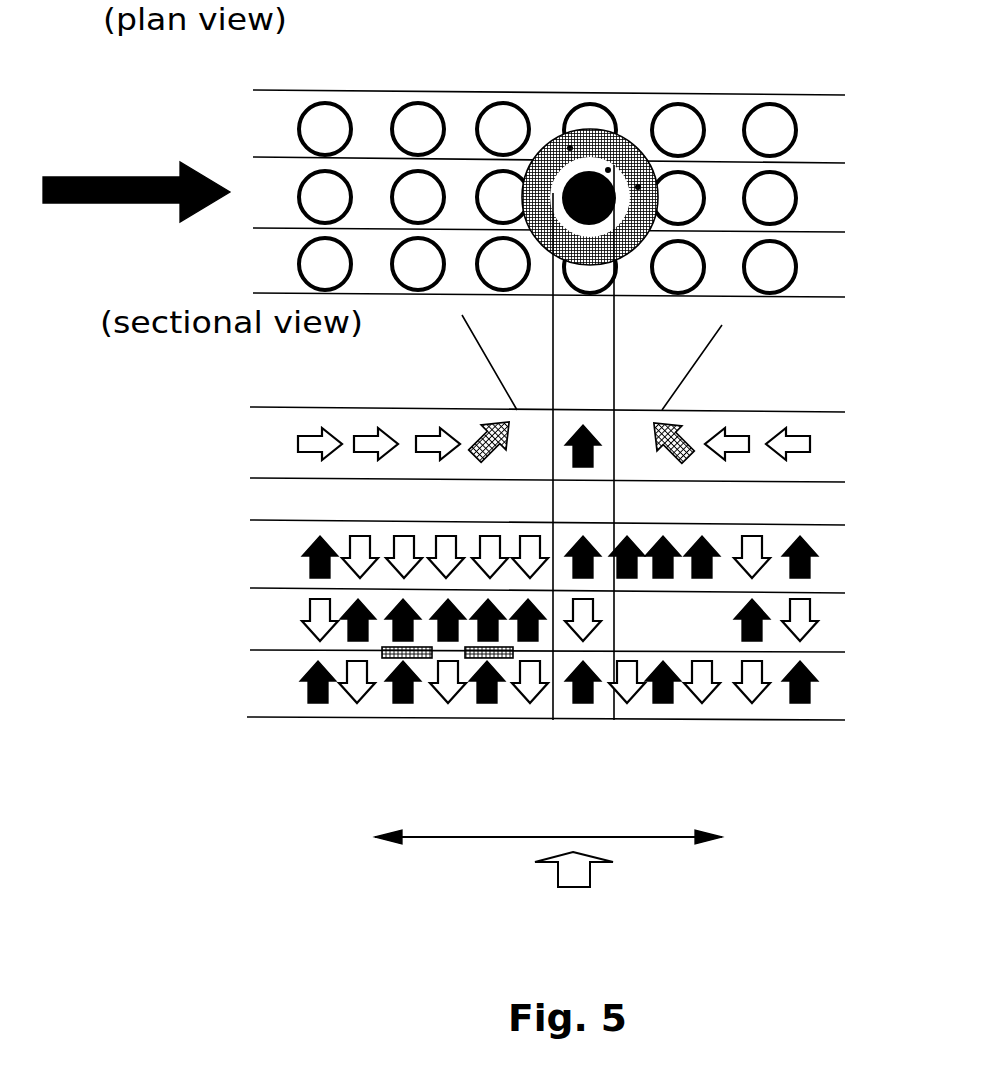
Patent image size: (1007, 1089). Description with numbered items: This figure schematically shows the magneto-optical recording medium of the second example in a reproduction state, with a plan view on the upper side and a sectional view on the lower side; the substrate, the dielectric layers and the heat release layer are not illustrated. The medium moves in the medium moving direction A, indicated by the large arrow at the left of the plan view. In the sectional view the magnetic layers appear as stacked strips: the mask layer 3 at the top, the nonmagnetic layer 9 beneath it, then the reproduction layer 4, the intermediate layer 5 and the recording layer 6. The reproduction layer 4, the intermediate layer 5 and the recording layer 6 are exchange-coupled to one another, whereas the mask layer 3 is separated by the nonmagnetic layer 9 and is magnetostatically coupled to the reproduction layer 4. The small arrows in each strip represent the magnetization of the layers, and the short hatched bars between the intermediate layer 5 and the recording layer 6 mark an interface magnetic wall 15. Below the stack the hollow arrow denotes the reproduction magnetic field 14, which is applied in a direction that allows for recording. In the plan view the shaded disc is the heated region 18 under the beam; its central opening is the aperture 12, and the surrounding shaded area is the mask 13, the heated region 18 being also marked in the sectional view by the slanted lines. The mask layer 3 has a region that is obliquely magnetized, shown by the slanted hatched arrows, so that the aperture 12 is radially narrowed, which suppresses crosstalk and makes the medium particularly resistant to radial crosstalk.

The medium moving direction A is at (105, 178).
The mask layer 3 is at (267, 449).
The nonmagnetic layer 9 is at (265, 503).
The reproduction layer 4 is at (268, 562).
The intermediate layer 5 is at (268, 624).
The recording layer 6 is at (270, 683).
The aperture 12 is at (570, 148).
The mask 13 is at (638, 187).
The reproduction magnetic field 14 is at (592, 873).
The interface magnetic wall 15 is at (470, 655).
The irradiated region 18 is at (543, 183).